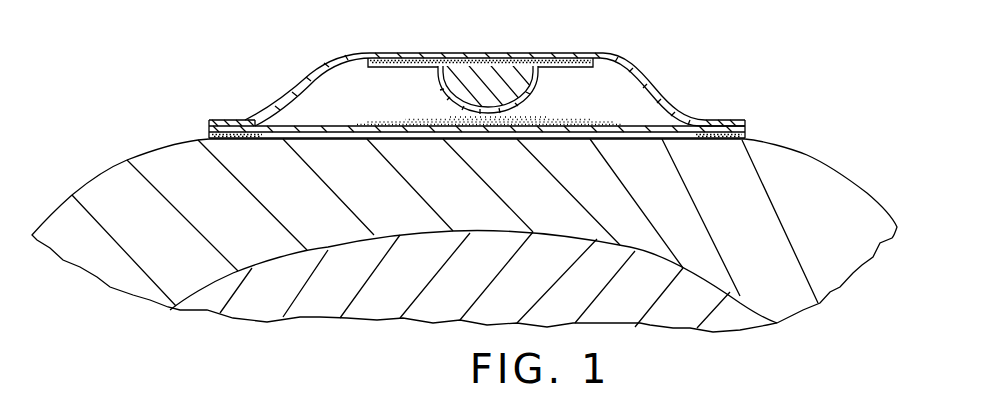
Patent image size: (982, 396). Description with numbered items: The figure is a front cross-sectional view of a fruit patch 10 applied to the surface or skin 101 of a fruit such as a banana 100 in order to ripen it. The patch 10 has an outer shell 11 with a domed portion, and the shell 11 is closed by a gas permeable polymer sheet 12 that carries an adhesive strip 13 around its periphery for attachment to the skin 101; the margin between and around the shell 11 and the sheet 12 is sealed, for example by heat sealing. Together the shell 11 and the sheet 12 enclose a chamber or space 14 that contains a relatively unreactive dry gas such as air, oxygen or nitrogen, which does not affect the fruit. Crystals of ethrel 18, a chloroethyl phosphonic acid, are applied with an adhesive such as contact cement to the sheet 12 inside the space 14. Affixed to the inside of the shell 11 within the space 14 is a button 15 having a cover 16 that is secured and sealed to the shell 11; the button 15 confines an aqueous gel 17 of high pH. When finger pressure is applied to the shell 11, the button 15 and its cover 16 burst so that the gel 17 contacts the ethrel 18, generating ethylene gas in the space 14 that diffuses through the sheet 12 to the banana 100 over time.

The fruit patch 10 is at (497, 101).
The outer shell 11 is at (245, 124).
The gas permeable polymer sheet 12 is at (493, 139).
The adhesive strip 13 is at (253, 139).
The chamber or space 14 is at (604, 83).
The button 15 is at (497, 106).
The cover 16 is at (438, 70).
The aqueous gel 17 is at (475, 78).
The ethrel crystals 18 is at (594, 120).
The banana 100 is at (798, 176).
The skin 101 is at (780, 144).